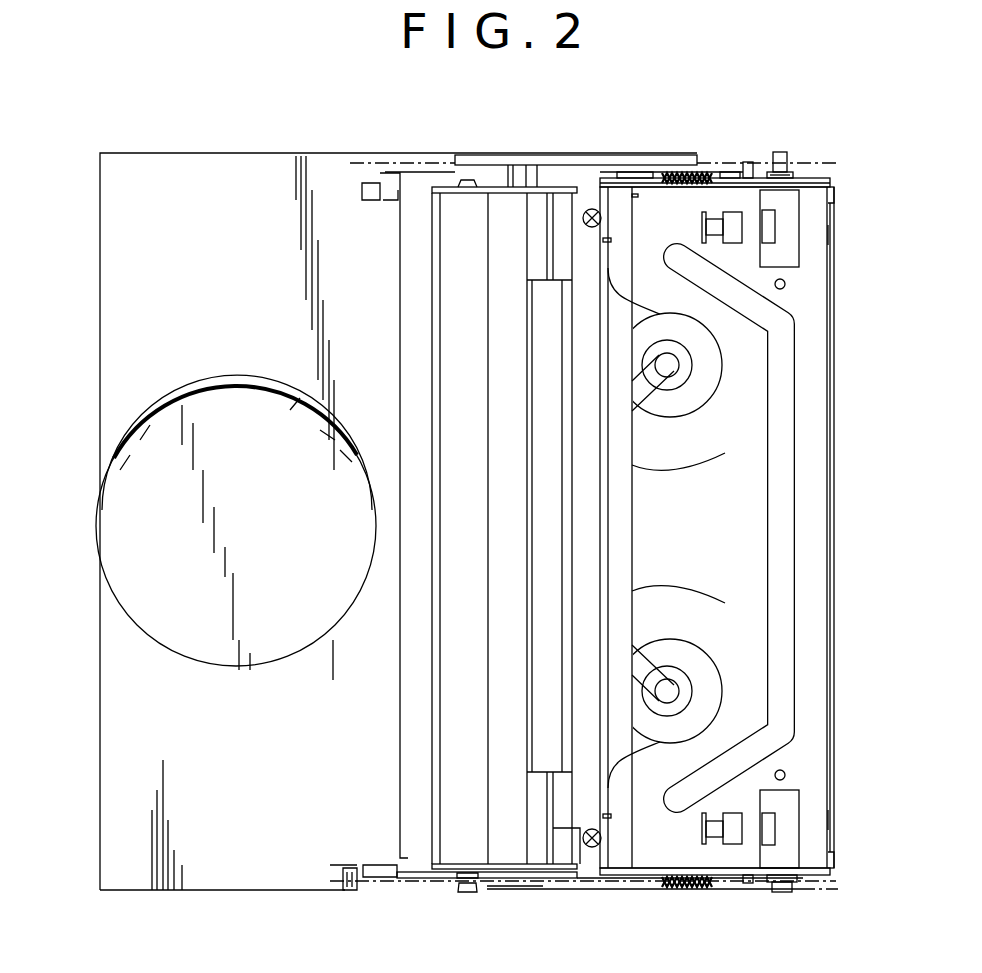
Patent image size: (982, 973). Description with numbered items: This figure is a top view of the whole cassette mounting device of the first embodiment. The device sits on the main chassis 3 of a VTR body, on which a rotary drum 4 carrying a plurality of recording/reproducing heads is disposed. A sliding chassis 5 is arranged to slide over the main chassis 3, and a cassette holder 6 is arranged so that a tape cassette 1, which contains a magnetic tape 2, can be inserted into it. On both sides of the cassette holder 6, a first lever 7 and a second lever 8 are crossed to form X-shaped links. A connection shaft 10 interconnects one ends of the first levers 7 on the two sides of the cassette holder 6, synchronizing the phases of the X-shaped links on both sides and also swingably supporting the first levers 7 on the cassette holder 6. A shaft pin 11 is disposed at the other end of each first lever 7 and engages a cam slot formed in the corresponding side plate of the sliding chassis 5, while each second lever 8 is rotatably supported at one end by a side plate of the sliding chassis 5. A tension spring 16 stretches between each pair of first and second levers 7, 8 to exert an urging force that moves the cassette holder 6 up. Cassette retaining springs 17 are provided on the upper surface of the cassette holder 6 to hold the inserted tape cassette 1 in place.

The tape cassette 1 is at (830, 488).
The magnetic tape 2 is at (713, 620).
The main chassis 3 is at (216, 882).
The rotary drum 4 is at (124, 532).
The sliding chassis 5 is at (826, 892).
The cassette holder 6 is at (752, 368).
The first lever 7 is at (743, 178).
The second lever 8 is at (507, 185).
The connection shaft 10 is at (784, 168).
The shaft pin 11 is at (468, 162).
The tension spring 16 is at (682, 176).
The cassette retaining spring 17 is at (717, 224).